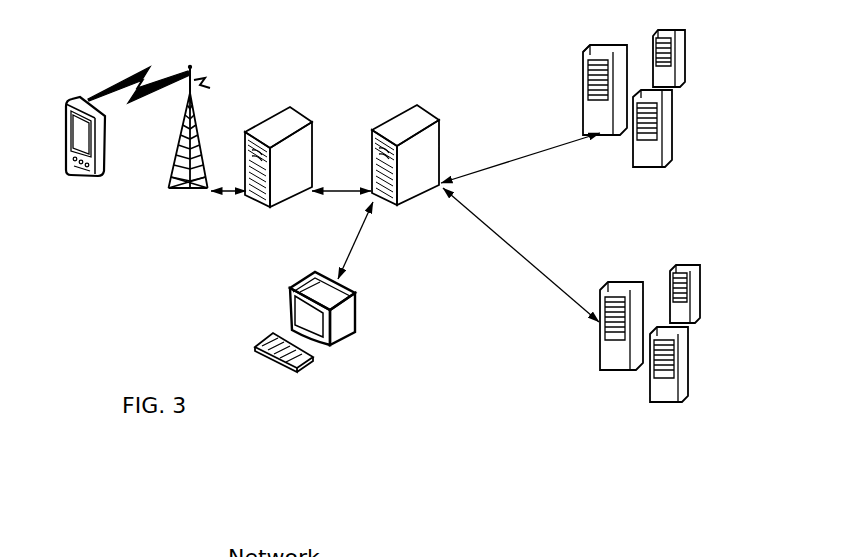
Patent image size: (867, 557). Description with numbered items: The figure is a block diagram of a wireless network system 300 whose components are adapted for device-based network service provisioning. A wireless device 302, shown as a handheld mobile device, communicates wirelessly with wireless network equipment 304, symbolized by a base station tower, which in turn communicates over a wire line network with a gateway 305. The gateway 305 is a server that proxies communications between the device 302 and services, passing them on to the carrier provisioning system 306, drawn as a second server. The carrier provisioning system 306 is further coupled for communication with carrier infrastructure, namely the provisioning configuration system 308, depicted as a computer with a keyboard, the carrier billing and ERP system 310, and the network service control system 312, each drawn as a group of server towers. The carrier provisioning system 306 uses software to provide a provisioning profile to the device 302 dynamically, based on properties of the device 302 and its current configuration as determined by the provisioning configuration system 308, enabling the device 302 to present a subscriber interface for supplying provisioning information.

The wireless network system 300 is at (366, 77).
The wireless device 302 is at (66, 165).
The wireless network equipment 304 is at (190, 193).
The gateway 305 is at (253, 206).
The carrier provisioning system 306 is at (380, 206).
The provisioning configuration system 308 is at (273, 368).
The carrier billing and ERP system 310 is at (632, 163).
The network service control system 312 is at (650, 402).